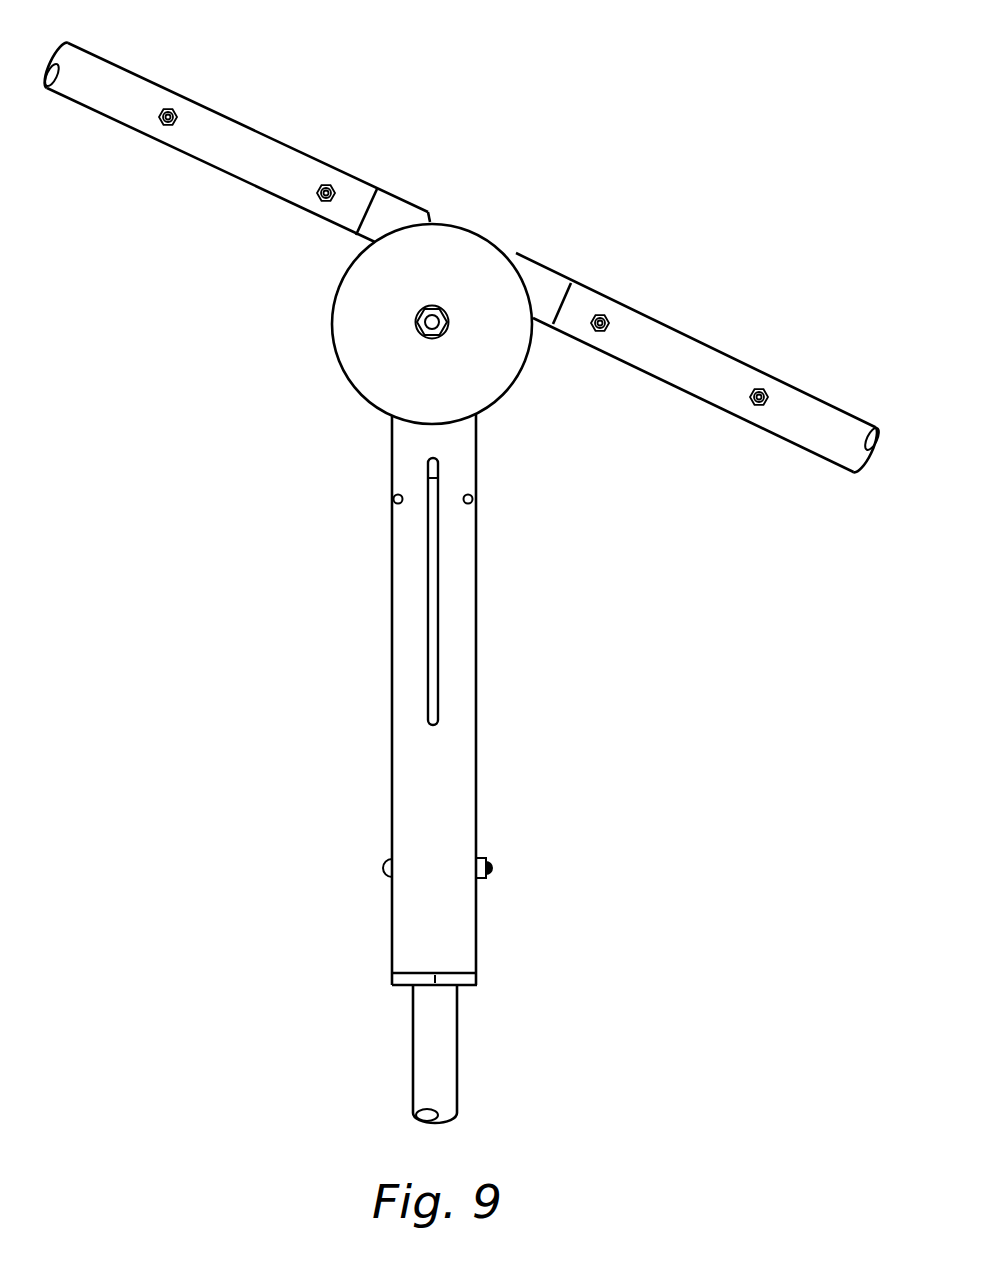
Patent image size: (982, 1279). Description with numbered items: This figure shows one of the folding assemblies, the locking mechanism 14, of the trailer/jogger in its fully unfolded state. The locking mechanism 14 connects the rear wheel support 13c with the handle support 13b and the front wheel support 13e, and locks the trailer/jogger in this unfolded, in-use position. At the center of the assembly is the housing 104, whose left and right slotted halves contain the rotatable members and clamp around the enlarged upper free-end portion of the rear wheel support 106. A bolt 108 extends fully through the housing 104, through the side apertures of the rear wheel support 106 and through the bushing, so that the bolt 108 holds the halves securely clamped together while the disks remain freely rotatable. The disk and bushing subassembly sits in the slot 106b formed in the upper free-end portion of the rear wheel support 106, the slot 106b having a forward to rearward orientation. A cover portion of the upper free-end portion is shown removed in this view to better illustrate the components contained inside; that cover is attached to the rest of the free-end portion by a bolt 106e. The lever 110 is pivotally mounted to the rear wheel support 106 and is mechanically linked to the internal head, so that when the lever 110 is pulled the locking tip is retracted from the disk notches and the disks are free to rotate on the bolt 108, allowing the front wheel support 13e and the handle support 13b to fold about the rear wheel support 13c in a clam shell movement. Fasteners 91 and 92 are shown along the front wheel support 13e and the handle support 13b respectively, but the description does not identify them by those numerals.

The handle support 13b is at (113, 78).
The rear wheel support 13c is at (440, 1073).
The front wheel support 13e is at (812, 435).
The locking mechanism 14 is at (409, 306).
The fastener nut 91 is at (608, 313).
The fastener nut 92 is at (158, 126).
The housing 104 is at (355, 337).
The rear wheel support 106 is at (488, 699).
The slot 106b is at (448, 770).
The bolt 106e is at (497, 865).
The bolt 108 is at (447, 332).
The lever 110 is at (435, 560).